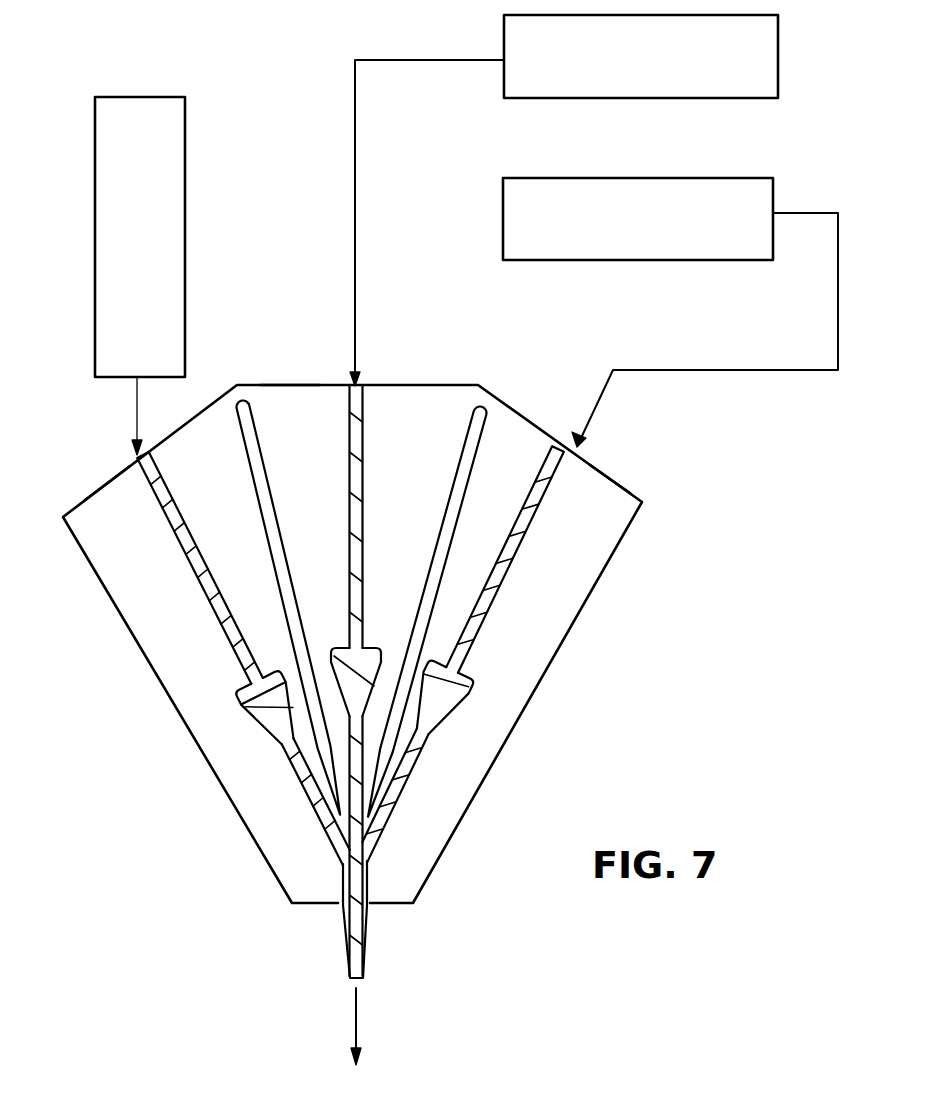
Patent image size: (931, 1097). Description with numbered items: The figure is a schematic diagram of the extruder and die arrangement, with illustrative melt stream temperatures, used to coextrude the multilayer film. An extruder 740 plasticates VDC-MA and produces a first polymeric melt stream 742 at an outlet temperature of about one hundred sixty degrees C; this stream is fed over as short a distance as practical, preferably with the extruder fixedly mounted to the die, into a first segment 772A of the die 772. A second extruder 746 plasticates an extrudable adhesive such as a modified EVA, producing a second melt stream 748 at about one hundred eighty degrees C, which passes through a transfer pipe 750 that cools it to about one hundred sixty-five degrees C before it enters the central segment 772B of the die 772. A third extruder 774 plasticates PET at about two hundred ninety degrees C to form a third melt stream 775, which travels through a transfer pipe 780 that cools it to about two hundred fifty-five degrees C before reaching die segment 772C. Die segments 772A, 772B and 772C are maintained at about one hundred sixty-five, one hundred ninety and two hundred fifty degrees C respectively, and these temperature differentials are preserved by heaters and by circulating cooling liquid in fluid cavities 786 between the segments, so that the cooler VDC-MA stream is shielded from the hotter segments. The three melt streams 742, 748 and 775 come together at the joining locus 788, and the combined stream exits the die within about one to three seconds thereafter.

The extruder 740 is at (185, 160).
The first polymeric melt stream 742 is at (178, 551).
The second extruder 746 is at (732, 73).
The second melt stream 748 is at (362, 453).
The transfer pipe 750 is at (353, 212).
The die 772 is at (195, 745).
The first die segment 772A is at (108, 482).
The central die segment 772B is at (278, 385).
The third die segment 772C is at (612, 480).
The third extruder 774 is at (567, 240).
The third melt stream 775 is at (523, 553).
The transfer pipe 780 is at (797, 370).
The fluid cavities 786 is at (293, 468).
The joining locus 788 is at (403, 869).